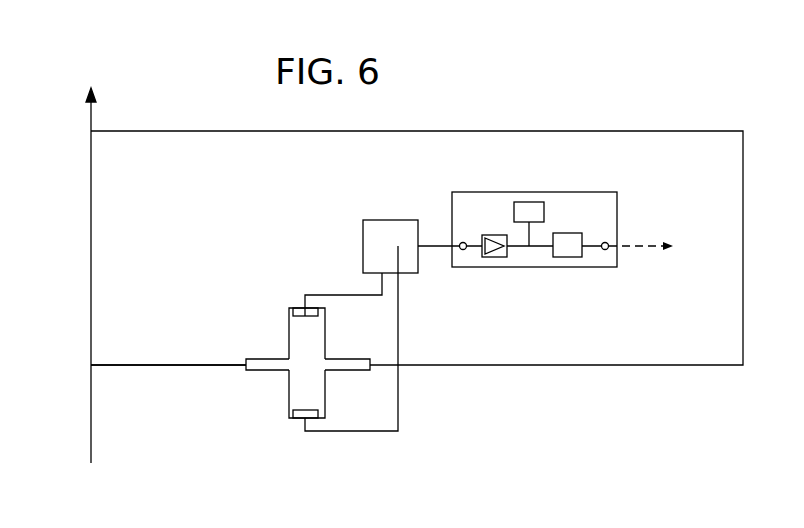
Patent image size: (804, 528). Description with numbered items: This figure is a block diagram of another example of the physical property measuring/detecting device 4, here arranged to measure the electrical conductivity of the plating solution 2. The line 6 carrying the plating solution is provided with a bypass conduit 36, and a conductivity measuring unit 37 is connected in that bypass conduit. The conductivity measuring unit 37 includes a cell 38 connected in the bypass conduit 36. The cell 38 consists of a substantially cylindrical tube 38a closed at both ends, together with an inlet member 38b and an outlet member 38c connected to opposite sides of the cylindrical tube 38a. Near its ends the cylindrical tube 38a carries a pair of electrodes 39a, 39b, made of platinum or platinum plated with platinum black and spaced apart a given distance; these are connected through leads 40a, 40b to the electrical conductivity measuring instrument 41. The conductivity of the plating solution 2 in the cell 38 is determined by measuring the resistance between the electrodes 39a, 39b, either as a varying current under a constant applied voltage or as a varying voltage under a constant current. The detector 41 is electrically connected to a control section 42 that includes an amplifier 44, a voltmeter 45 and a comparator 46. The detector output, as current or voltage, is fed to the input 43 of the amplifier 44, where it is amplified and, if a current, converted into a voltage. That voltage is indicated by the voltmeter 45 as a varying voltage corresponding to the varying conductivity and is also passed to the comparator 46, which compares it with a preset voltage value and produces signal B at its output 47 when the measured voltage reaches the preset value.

The plating solution 2 is at (312, 335).
The physical property measuring/detecting device 4 is at (439, 149).
The line 6 is at (91, 236).
The bypass conduit 36 is at (172, 365).
The conductivity measuring unit 37 is at (281, 353).
The cell 38 is at (285, 332).
The cylindrical tube 38a is at (294, 385).
The inlet member 38b is at (252, 372).
The outlet member 38c is at (362, 372).
The electrode 39a is at (304, 308).
The electrode 39b is at (302, 420).
The lead 40a is at (330, 295).
The lead 40b is at (399, 405).
The electrical conductivity measuring instrument 41 is at (380, 232).
The control section 42 is at (564, 231).
The input 43 is at (463, 250).
The amplifier 44 is at (498, 256).
The voltmeter 45 is at (527, 205).
The comparator 46 is at (567, 257).
The output 47 is at (605, 250).